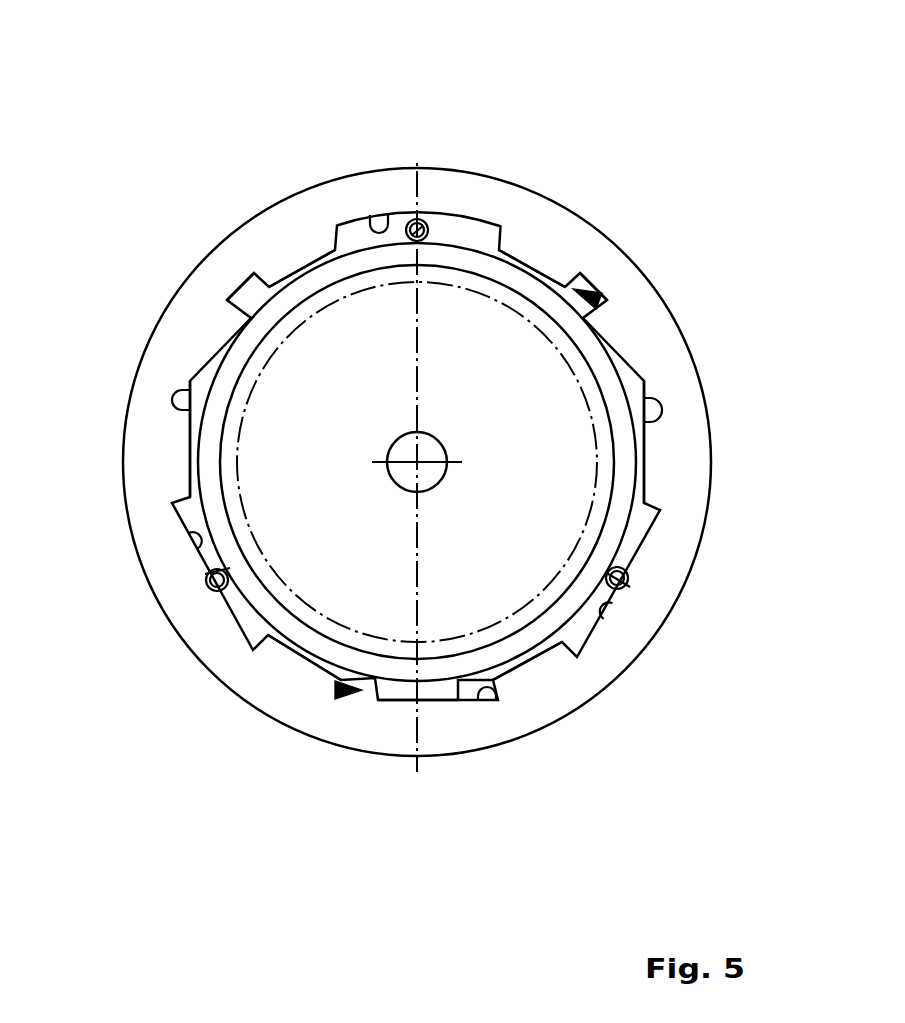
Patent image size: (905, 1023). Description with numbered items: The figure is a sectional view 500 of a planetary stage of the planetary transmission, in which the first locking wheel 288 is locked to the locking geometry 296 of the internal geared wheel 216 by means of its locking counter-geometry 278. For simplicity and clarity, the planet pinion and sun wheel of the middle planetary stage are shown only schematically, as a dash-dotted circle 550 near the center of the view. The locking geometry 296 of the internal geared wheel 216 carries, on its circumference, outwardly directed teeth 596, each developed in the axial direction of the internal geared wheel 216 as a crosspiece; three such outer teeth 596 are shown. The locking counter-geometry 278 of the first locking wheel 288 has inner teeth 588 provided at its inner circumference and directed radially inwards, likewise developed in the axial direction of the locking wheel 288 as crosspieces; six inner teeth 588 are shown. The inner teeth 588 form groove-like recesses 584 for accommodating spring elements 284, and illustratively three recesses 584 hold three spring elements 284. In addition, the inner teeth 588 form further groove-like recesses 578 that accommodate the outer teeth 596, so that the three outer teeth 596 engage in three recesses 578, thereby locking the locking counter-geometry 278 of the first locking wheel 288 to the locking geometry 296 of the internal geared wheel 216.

The sectional view 500 is at (97, 33).
The dash-dotted circle 550 is at (268, 364).
The first locking wheel 288 is at (576, 242).
The locking counter-geometry 278 is at (602, 298).
The locking geometry 296 is at (340, 690).
The internal geared wheel 216 is at (592, 357).
The inner teeth 588 is at (297, 253).
The outer tooth 596 is at (205, 357).
The groove-like recess 578 is at (200, 403).
The groove-like recess 584 is at (378, 226).
The spring element 284 is at (437, 222).